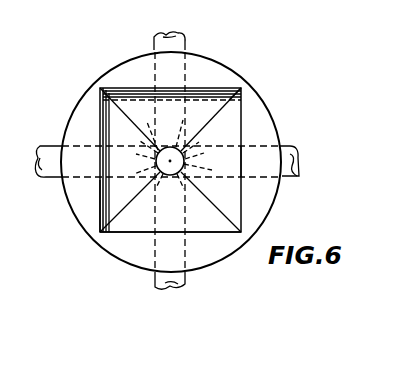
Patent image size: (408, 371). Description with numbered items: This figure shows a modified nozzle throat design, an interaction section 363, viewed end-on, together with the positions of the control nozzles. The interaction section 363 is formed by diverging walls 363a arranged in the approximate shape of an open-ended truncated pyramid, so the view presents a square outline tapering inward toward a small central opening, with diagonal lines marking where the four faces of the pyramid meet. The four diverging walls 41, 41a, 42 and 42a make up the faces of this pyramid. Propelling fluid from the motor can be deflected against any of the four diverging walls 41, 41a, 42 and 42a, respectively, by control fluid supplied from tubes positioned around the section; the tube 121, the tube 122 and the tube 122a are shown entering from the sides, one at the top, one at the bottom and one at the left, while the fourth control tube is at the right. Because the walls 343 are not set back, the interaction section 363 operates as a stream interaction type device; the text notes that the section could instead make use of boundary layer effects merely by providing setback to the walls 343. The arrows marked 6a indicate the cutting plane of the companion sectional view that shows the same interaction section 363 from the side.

The diverging wall 41 is at (192, 96).
The diverging wall 41a is at (231, 162).
The diverging wall 42 is at (141, 215).
The diverging wall 42a is at (100, 198).
The walls 343 is at (184, 163).
The interaction section 363 is at (116, 128).
The diverging walls 363a is at (230, 118).
The tube 121 is at (185, 42).
The tube 122 is at (185, 282).
The tube 122a is at (46, 148).
The section line 6a is at (145, 19).